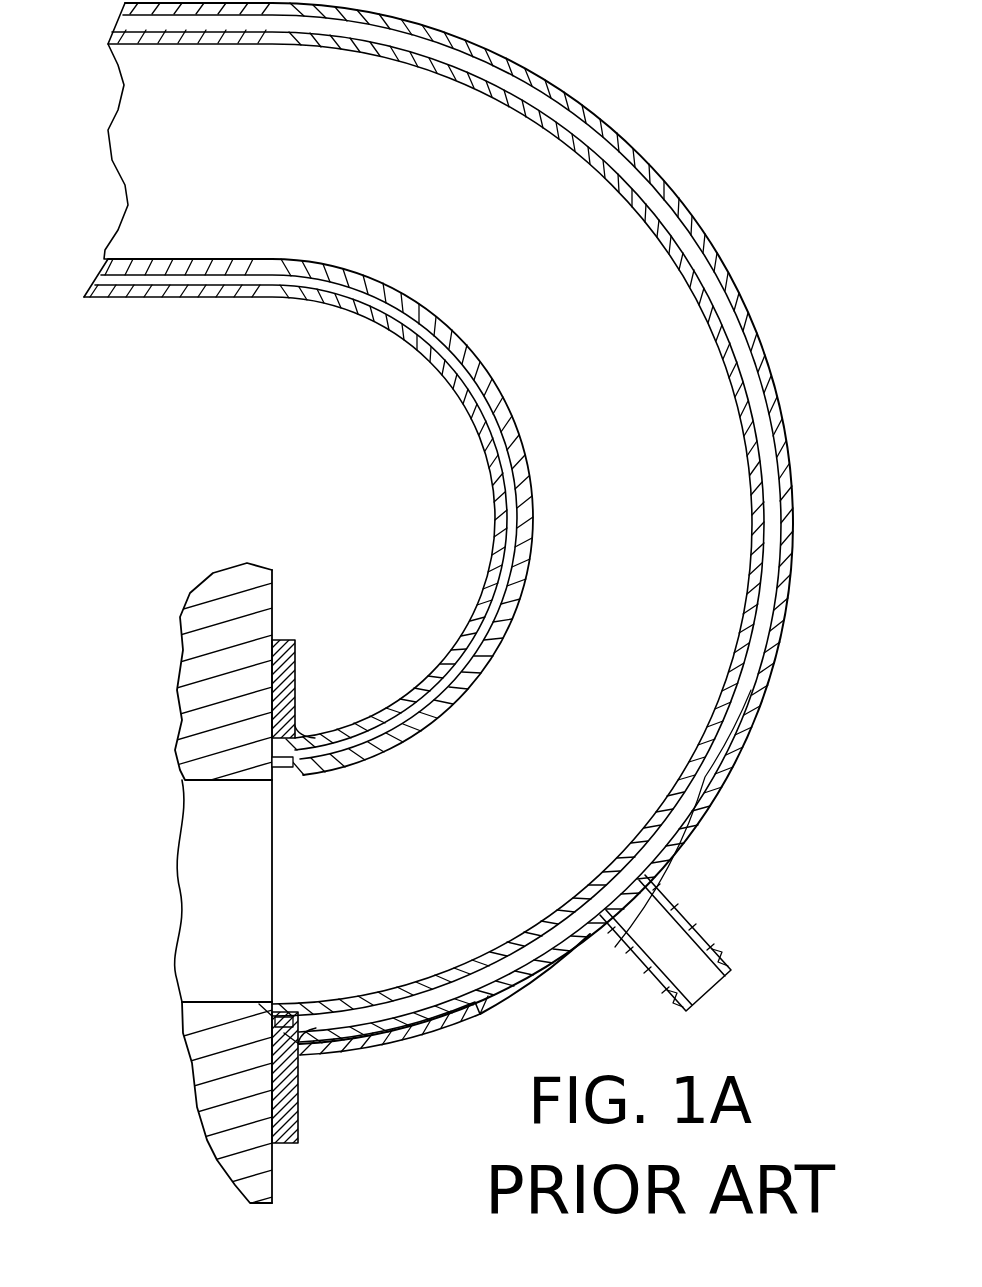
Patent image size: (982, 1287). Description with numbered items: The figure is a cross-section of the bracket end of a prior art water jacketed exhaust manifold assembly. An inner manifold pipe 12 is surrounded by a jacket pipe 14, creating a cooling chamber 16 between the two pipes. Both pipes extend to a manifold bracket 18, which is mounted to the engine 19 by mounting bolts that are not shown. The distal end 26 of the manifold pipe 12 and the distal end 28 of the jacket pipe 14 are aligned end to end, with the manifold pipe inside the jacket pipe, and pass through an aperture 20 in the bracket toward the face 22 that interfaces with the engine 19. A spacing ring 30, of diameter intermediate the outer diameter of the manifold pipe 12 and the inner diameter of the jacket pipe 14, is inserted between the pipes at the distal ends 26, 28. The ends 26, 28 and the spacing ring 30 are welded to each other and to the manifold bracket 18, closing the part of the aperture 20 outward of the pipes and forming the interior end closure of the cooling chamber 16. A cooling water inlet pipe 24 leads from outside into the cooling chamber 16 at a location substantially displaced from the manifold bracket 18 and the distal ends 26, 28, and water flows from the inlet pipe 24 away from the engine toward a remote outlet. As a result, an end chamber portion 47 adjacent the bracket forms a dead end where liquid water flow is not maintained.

The manifold pipe 12 is at (773, 527).
The jacket pipe 14 is at (780, 632).
The cooling chamber 16 is at (702, 768).
The manifold bracket 18 is at (300, 1105).
The engine 19 is at (277, 1172).
The aperture 20 is at (360, 1027).
The face 22 is at (268, 1085).
The cooling water inlet pipe 24 is at (693, 913).
The distal end of manifold pipe 26 is at (245, 1002).
The distal end of jacket pipe 28 is at (273, 1035).
The spacing ring 30 is at (252, 780).
The end chamber portion 47 is at (547, 940).